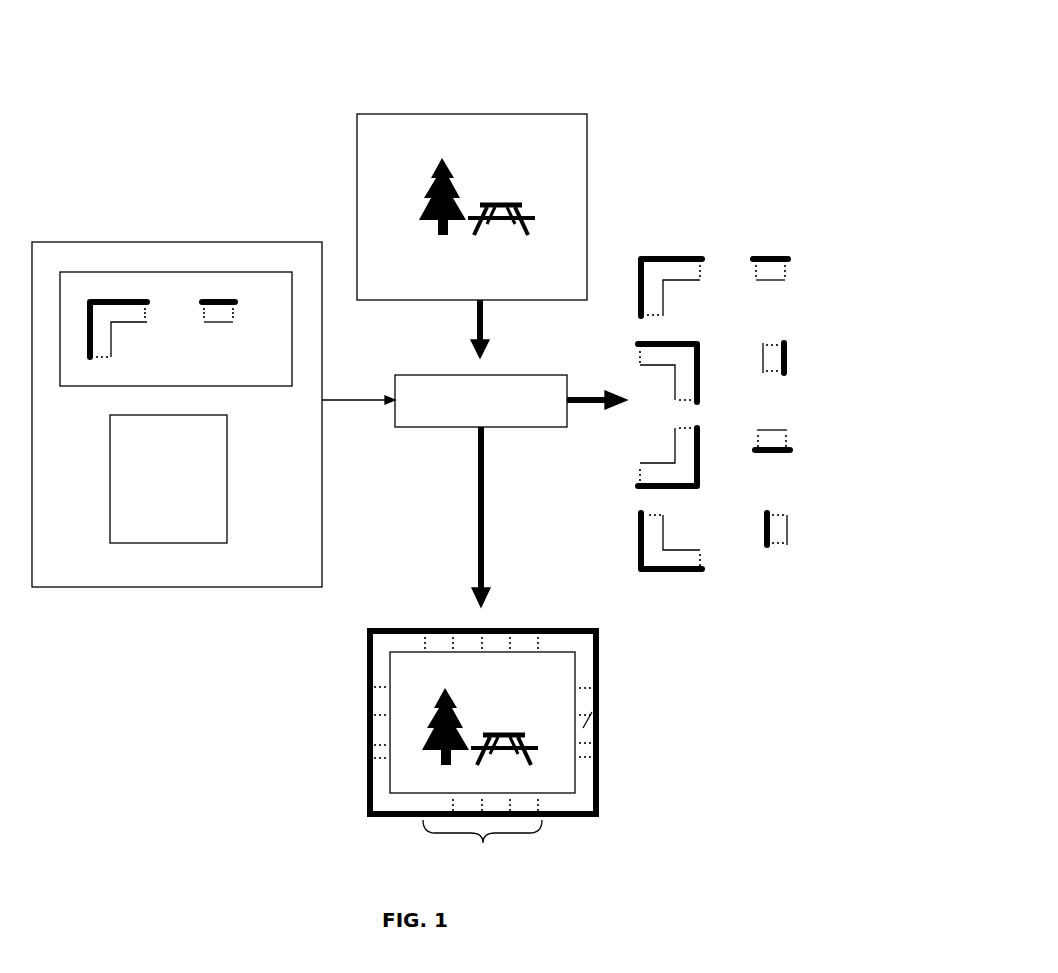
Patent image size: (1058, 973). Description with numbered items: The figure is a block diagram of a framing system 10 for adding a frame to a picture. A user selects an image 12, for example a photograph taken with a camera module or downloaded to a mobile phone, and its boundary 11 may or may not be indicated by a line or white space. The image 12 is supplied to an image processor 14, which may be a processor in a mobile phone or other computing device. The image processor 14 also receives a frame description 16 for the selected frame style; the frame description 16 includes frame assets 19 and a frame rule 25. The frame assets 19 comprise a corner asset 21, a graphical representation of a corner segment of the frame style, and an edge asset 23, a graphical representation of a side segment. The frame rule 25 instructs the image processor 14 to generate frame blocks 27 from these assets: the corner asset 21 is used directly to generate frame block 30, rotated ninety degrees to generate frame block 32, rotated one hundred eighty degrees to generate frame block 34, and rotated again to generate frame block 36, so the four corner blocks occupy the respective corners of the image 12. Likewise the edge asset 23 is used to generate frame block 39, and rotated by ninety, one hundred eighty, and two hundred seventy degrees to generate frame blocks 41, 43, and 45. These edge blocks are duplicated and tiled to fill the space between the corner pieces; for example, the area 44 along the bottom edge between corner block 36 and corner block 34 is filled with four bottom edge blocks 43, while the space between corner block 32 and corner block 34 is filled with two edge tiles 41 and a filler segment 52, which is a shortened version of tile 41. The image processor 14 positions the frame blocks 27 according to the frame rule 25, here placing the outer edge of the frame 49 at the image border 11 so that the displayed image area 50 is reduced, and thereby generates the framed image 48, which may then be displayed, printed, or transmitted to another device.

The framing system 10 is at (735, 39).
The boundary of the image 11 is at (518, 457).
The image 12 is at (317, 137).
The image processor 14 is at (502, 372).
The frame description 16 is at (177, 380).
The frame assets 19 is at (172, 359).
The corner asset 21 is at (146, 276).
The edge asset 23 is at (242, 255).
The frame rule 25 is at (197, 479).
The frame blocks 27 is at (774, 176).
The frame block 30 is at (506, 443).
The frame block 32 is at (666, 487).
The frame block 34 is at (662, 626).
The frame block 36 is at (527, 684).
The frame block 39 is at (606, 431).
The frame block 41 is at (600, 700).
The frame block 43 is at (388, 840).
The area along the bottom edge 44 is at (482, 849).
The frame block 45 is at (547, 522).
The framed image 48 is at (434, 722).
The frame 49 is at (326, 753).
The displayed image area 50 is at (540, 715).
The filler segment 52 is at (588, 752).